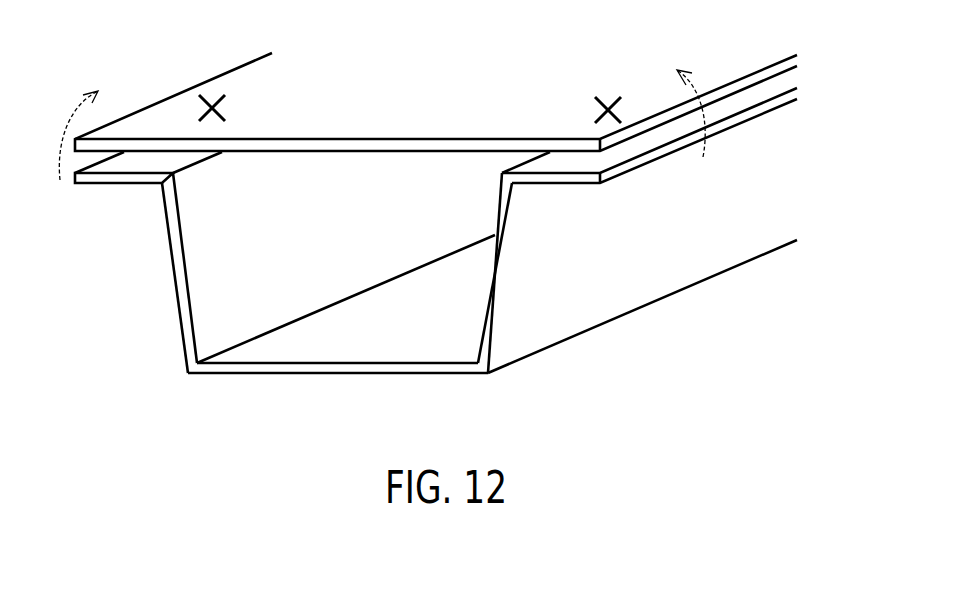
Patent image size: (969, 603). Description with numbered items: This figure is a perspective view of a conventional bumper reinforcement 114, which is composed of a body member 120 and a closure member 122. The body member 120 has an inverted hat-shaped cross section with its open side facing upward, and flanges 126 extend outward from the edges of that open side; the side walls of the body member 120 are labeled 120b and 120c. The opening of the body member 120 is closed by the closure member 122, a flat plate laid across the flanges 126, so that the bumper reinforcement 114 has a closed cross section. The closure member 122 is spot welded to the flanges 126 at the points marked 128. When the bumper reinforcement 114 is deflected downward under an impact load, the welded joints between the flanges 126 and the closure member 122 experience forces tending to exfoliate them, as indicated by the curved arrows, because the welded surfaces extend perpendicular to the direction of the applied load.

The bumper reinforcement 114 is at (428, 207).
The closure member 122 is at (421, 142).
The spot weld 128 is at (213, 100).
The body member 120 is at (428, 294).
The left side wall 120b is at (185, 300).
The right side wall 120c is at (490, 320).
The flange 126 is at (118, 186).